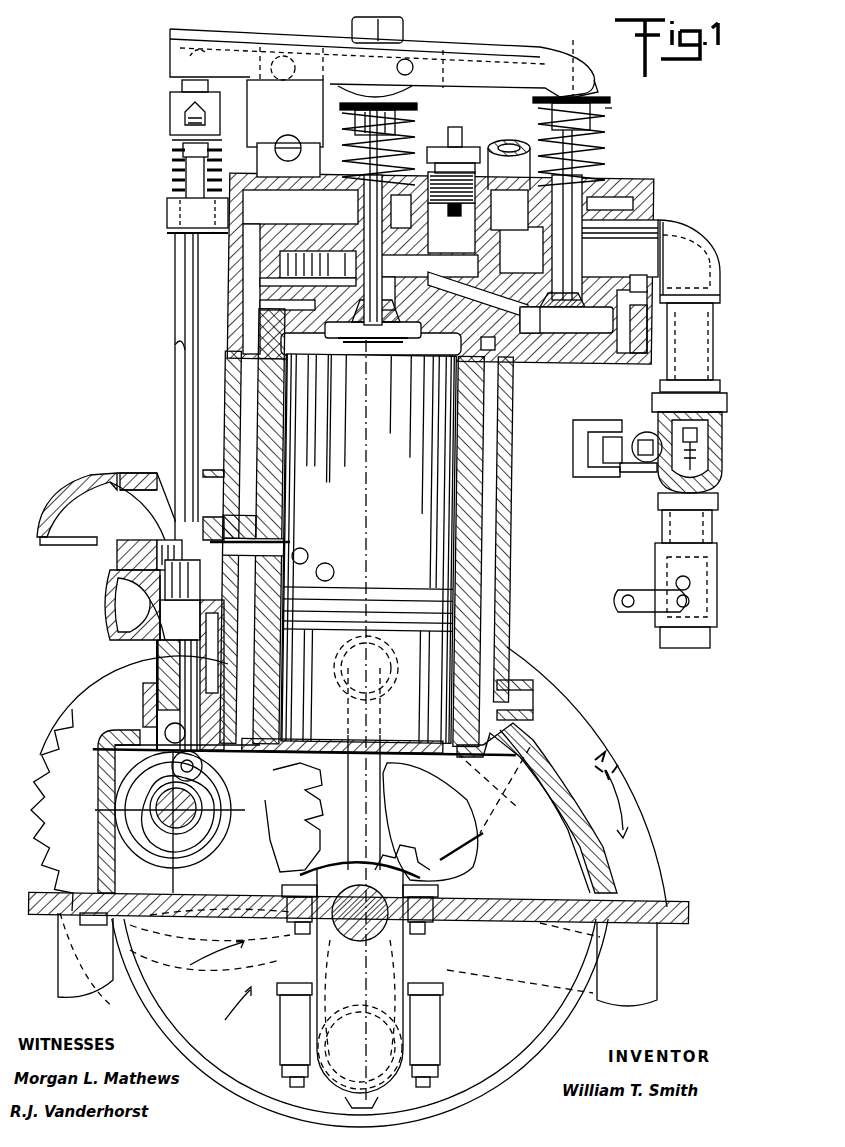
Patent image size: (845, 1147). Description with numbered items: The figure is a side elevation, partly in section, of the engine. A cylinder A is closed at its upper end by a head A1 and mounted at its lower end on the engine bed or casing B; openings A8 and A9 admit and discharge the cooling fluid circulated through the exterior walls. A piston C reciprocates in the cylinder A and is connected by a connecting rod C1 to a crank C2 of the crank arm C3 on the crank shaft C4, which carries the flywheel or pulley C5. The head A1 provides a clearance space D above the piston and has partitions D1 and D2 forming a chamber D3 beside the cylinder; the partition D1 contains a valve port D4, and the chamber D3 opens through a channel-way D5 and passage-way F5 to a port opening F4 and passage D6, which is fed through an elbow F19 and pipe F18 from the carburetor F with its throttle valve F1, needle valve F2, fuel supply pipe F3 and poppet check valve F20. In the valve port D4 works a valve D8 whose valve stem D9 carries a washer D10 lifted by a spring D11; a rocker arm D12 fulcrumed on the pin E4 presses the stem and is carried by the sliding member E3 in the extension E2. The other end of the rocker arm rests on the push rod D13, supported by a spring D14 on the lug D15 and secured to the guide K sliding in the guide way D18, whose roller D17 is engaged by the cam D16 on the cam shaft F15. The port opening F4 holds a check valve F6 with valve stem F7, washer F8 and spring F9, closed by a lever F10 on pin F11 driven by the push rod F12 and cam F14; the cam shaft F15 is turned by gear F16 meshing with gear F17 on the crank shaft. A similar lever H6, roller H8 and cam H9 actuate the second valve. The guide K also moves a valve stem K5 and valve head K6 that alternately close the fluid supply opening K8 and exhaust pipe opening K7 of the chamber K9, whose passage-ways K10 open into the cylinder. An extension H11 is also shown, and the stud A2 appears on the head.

The cylinder A is at (475, 548).
The cylinder head A1 is at (653, 195).
The stud bolt A2 is at (460, 127).
The cooling fluid opening A8 is at (498, 147).
The cooling fluid opening A9 is at (517, 700).
The engine bed or casing B is at (672, 903).
The piston C is at (394, 603).
The connecting rod C1 is at (372, 790).
The crank C2 is at (367, 1050).
The crank arm C3 is at (397, 972).
The crank shaft C4 is at (343, 923).
The flywheel or pulley C5 is at (637, 820).
The clearance space D is at (388, 327).
The partition D1 is at (300, 285).
The partition D2 is at (232, 237).
The chamber D3 is at (429, 252).
The valve port D4 is at (300, 304).
The channel-way D5 is at (478, 295).
The passage D6 is at (643, 238).
The valve D8 is at (373, 340).
The valve stem D9 is at (386, 144).
The washer D10 is at (415, 100).
The spring D11 is at (343, 130).
The rocker arm D12 is at (370, 83).
The push rod D13 is at (177, 153).
The spring D14 is at (170, 187).
The lug D15 is at (175, 213).
The cam D16 is at (113, 733).
The roller D17 is at (150, 715).
The guide way D18 is at (148, 685).
The extension E2 is at (180, 150).
The sliding member E3 is at (177, 176).
The pin E4 is at (210, 52).
The carburetor or fuel mixing device F is at (722, 480).
The throttle valve F1 is at (713, 582).
The needle valve F2 is at (577, 470).
The fuel supply pipe F3 is at (643, 460).
The port opening F4 is at (573, 270).
The passage-way F5 is at (548, 323).
The check valve F6 is at (590, 330).
The valve stem F7 is at (582, 162).
The washer F8 is at (597, 117).
The spring F9 is at (646, 118).
The lever F10 is at (497, 72).
The pin F11 is at (408, 88).
The push rod F12 is at (185, 375).
The cam F14 is at (200, 827).
The cam shaft F15 is at (173, 915).
The gear F16 is at (75, 762).
The gear F17 is at (410, 858).
The pipe F18 is at (697, 348).
The elbow F19 is at (68, 507).
The poppet check valve F20 is at (725, 422).
The lever H6 is at (580, 93).
The roller H8 is at (280, 741).
The cam H9 is at (203, 764).
The plate H11 is at (103, 610).
The guide K is at (157, 657).
The valve stem K5 is at (167, 583).
The valve head K6 is at (155, 552).
The exhaust pipe opening K7 is at (157, 600).
The fluid supply opening K8 is at (97, 495).
The chamber K9 is at (237, 562).
The passage-way K10 is at (316, 568).